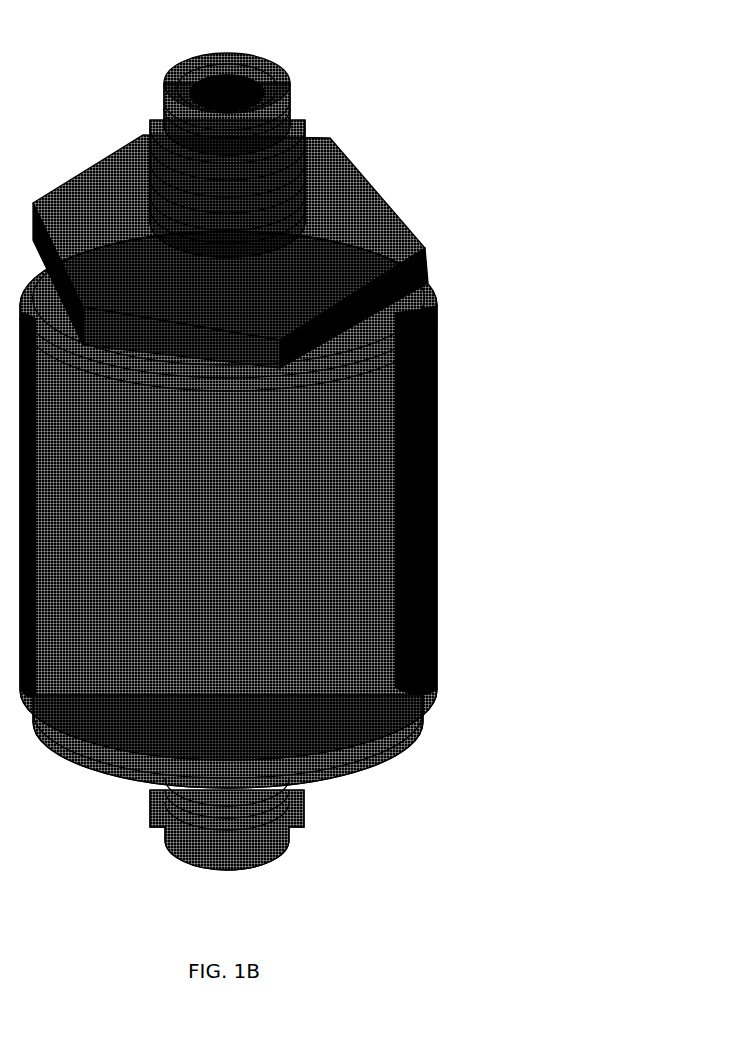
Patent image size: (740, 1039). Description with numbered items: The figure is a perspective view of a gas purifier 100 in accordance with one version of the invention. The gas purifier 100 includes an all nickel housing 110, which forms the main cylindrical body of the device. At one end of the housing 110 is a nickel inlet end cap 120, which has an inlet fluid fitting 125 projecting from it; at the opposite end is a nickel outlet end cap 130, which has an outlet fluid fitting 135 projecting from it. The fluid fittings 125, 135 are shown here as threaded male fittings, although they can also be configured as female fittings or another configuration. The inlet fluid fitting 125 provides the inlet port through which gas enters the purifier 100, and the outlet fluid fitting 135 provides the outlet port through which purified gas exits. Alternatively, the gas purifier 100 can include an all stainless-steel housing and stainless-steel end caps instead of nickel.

The gas purifier 100 is at (326, 456).
The all nickel housing 110 is at (436, 417).
The nickel inlet end cap 120 is at (387, 748).
The inlet fluid fitting 125 is at (300, 810).
The nickel outlet end cap 130 is at (400, 212).
The outlet fluid fitting 135 is at (305, 127).